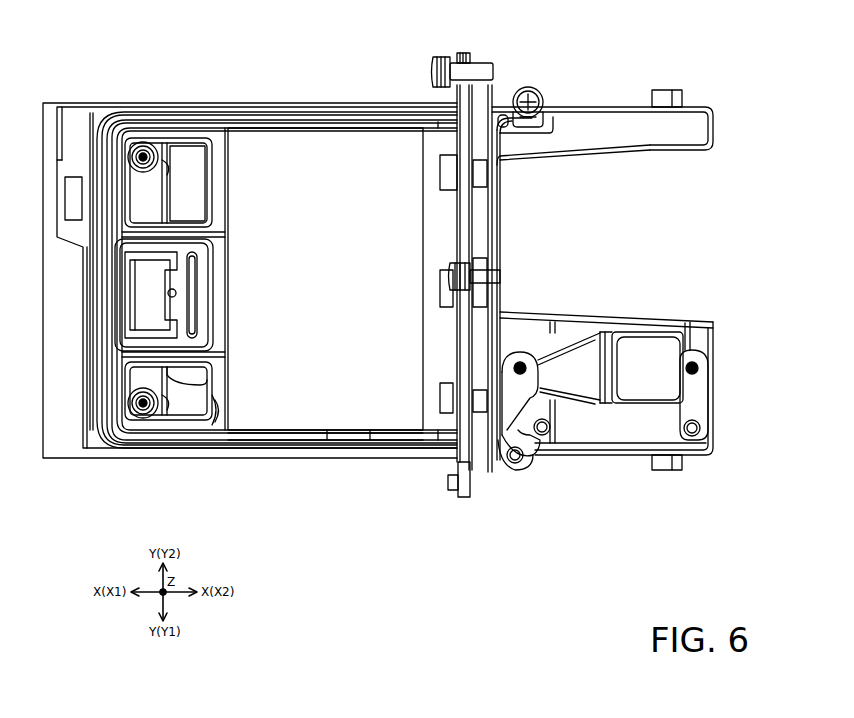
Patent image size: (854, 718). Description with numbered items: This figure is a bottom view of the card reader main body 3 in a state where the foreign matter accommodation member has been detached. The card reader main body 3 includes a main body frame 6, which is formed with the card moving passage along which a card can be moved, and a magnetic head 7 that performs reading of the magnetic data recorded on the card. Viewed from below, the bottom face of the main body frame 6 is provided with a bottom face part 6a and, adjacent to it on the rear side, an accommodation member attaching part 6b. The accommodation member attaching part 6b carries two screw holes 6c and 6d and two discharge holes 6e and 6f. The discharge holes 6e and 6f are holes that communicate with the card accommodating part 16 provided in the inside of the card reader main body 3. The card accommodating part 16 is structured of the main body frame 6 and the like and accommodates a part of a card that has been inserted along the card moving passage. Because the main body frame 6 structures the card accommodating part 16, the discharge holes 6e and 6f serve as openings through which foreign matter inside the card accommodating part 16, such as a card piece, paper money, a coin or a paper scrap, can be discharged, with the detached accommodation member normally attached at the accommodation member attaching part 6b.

The card reader main body 3 is at (508, 58).
The main body frame 6 is at (577, 456).
The bottom face part 6a is at (348, 410).
The accommodation member attaching part 6b is at (216, 412).
The screw hole 6c is at (143, 150).
The screw hole 6d is at (146, 410).
The discharge hole 6e is at (205, 187).
The discharge hole 6f is at (205, 395).
The magnetic head 7 is at (640, 378).
The card accommodating part 16 is at (193, 146).